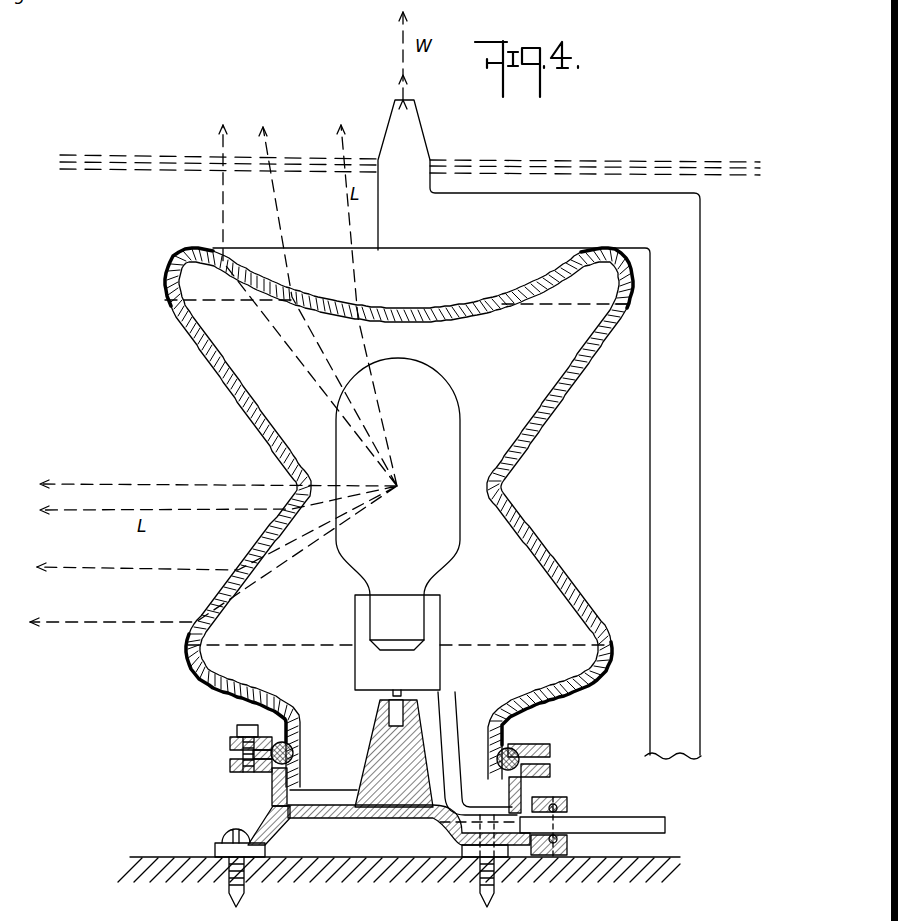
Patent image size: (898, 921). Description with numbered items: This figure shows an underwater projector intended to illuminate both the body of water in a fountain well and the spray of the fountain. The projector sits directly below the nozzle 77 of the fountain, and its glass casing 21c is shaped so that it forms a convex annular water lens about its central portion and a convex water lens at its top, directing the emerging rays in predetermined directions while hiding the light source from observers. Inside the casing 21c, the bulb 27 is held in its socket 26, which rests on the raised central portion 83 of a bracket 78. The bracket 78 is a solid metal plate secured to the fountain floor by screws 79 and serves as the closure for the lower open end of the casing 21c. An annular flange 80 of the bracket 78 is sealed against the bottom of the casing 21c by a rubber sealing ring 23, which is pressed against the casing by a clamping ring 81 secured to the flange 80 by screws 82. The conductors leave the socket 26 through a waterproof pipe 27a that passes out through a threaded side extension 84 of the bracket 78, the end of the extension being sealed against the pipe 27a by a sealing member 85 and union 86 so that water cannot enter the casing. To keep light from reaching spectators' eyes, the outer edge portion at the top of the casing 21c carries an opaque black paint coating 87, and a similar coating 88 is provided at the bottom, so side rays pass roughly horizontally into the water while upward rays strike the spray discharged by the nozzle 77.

The nozzle 77 is at (418, 137).
The glass casing 21c is at (572, 372).
The black paint coating 87 is at (636, 276).
The coating 88 is at (211, 692).
The bulb 27 is at (452, 428).
The socket 26 is at (436, 623).
The waterproof pipe 27a is at (444, 723).
The raised central portion 83 is at (394, 753).
The bracket 78 is at (345, 812).
The sealing ring 23 is at (300, 755).
The clamping ring 81 is at (232, 743).
The annular flange 80 is at (232, 768).
The screws 82 is at (252, 712).
The threaded side extension 84 is at (541, 796).
The sealing member 85 is at (568, 804).
The union 86 is at (566, 796).
The screws 79 is at (233, 838).